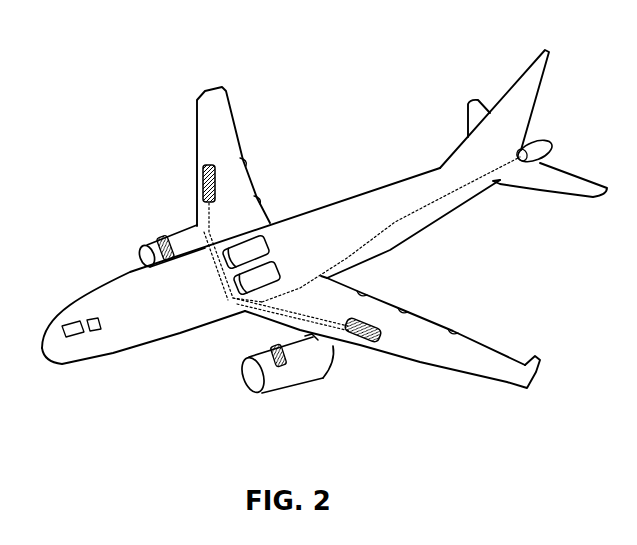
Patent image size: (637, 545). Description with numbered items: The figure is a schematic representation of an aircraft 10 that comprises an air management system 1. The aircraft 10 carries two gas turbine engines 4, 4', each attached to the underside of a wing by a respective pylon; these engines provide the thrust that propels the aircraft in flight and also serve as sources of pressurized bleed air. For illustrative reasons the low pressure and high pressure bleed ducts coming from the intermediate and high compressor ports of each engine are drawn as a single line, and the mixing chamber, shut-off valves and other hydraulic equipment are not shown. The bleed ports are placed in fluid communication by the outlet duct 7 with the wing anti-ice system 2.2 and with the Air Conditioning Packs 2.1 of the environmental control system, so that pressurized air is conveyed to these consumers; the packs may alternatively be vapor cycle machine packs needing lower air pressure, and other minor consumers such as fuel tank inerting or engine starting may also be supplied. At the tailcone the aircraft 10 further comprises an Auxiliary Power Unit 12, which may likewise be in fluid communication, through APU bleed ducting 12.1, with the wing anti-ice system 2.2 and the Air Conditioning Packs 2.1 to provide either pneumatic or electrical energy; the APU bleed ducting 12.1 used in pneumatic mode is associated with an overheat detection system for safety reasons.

The air management system 1 is at (209, 295).
The Air Conditioning Packs 2.1 is at (268, 272).
The wing anti-ice system 2.2 is at (217, 170).
The gas turbine engine 4 is at (152, 221).
The gas turbine engine 4' is at (260, 379).
The outlet duct 7 is at (303, 337).
The aircraft 10 is at (96, 257).
The Auxiliary Power Unit 12 is at (542, 143).
The APU bleed ducting 12.1 is at (403, 212).